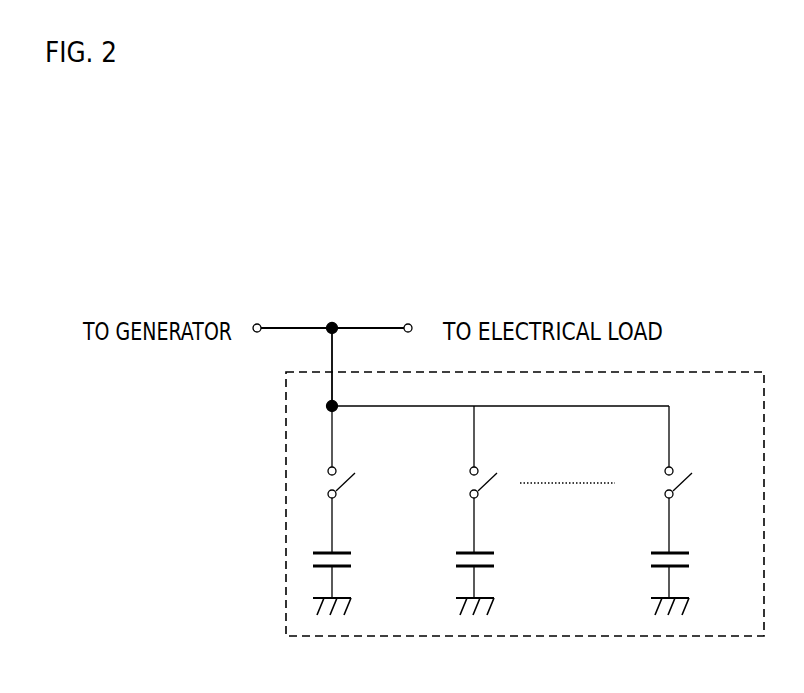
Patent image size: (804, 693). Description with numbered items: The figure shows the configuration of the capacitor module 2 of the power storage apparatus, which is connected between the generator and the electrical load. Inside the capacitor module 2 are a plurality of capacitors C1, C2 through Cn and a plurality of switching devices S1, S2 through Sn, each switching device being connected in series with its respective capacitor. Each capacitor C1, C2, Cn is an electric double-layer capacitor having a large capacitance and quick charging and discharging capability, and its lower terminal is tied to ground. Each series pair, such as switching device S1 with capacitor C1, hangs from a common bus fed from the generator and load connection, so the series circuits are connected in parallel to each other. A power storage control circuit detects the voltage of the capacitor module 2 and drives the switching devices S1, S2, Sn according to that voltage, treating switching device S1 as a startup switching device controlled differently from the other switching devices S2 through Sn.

The capacitor module 2 is at (286, 437).
The startup switching device S1 is at (325, 482).
The switching device S2 is at (462, 477).
The switching device Sn is at (660, 476).
The capacitor C1 is at (345, 570).
The capacitor C2 is at (488, 570).
The capacitor Cn is at (692, 570).